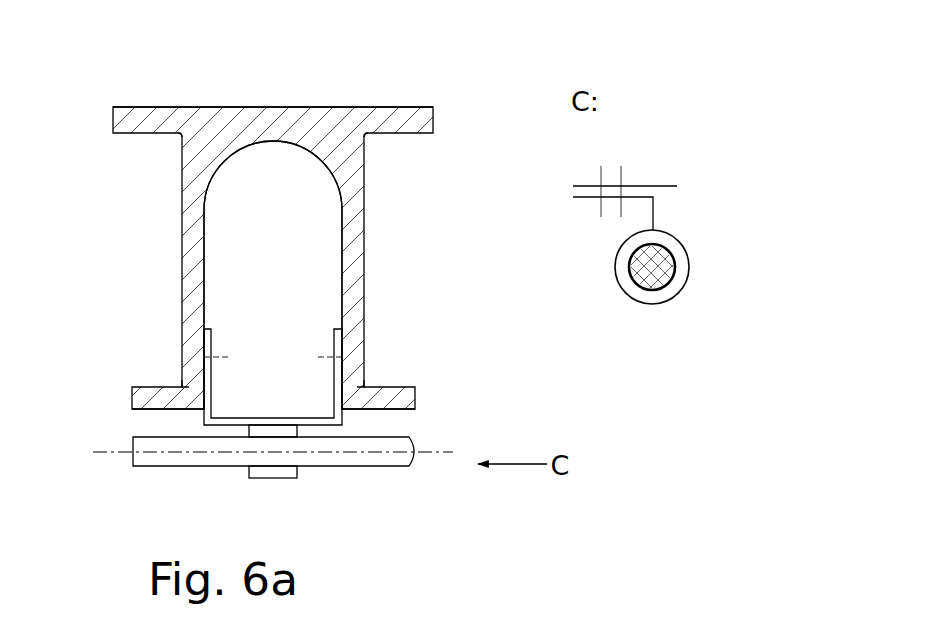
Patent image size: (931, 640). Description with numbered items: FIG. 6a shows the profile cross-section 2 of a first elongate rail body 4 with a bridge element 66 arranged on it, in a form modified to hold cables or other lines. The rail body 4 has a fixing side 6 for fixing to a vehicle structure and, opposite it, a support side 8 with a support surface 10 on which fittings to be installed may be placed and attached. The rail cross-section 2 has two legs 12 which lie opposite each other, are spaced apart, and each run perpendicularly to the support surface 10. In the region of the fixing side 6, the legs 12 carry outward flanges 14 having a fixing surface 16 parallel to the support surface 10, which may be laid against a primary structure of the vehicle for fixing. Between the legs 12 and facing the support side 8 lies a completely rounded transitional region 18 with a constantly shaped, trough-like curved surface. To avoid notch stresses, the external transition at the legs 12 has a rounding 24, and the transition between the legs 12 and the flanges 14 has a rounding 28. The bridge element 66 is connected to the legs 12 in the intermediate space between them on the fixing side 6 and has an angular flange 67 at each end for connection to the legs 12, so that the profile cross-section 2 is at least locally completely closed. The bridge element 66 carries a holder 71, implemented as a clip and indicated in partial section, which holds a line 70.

The profile cross-section 2 is at (276, 235).
The first elongate rail body 4 is at (276, 227).
The fixing side 6 is at (436, 317).
The support side 8 is at (131, 95).
The support surface 10 is at (243, 107).
The legs 12 is at (172, 229).
The outward flanges 14 is at (146, 399).
The fixing surface 16 is at (136, 410).
The transitional region 18 is at (205, 199).
The rounding 24 is at (174, 143).
The rounding 28 is at (177, 382).
The bridge element 66 is at (667, 186).
The angular flange 67 is at (207, 329).
The line 70 is at (273, 460).
The holder 71 is at (247, 470).